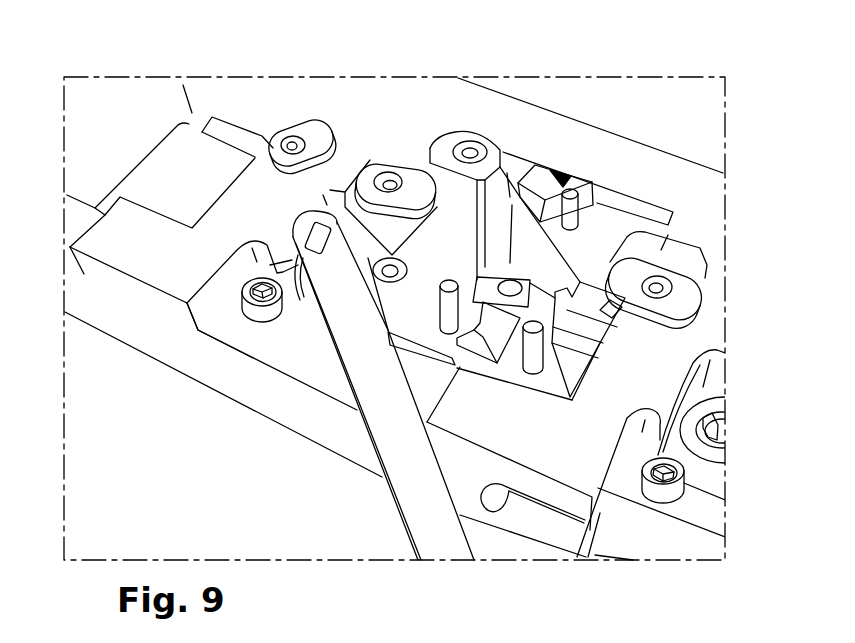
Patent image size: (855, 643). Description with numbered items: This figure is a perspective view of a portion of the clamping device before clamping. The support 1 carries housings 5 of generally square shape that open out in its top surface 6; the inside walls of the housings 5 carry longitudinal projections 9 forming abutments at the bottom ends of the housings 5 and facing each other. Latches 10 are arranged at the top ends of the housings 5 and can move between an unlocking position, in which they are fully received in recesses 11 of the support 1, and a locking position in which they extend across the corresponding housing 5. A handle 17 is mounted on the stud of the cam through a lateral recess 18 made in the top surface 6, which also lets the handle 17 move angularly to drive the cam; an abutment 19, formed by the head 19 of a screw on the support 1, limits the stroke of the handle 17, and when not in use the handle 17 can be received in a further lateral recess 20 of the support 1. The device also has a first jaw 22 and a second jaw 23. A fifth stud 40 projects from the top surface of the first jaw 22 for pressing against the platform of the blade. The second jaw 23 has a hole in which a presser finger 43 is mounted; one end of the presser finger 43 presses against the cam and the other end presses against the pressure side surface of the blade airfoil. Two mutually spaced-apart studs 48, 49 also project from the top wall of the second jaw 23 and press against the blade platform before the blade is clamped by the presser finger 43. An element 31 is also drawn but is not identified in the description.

The support 1 is at (99, 349).
The housing 5 is at (224, 100).
The top surface 6 is at (425, 100).
The longitudinal projection 9 is at (242, 137).
The latch 10 is at (317, 118).
The recess 11 is at (700, 274).
The handle 17 is at (427, 512).
The lateral recess 18 is at (303, 349).
The abutment 19 is at (258, 300).
The lateral recess 20 is at (528, 520).
The first jaw 22 is at (605, 237).
The second jaw 23 is at (453, 233).
The stop block 31 is at (565, 346).
The fifth stud 40 is at (570, 192).
The presser finger 43 is at (485, 284).
The stud 48 is at (490, 338).
The stud 49 is at (535, 345).